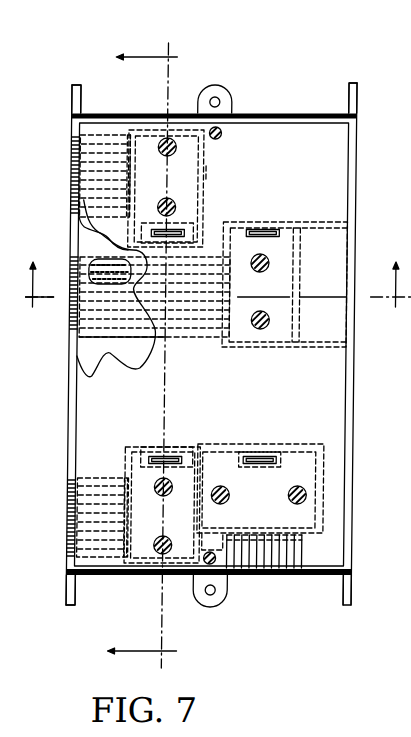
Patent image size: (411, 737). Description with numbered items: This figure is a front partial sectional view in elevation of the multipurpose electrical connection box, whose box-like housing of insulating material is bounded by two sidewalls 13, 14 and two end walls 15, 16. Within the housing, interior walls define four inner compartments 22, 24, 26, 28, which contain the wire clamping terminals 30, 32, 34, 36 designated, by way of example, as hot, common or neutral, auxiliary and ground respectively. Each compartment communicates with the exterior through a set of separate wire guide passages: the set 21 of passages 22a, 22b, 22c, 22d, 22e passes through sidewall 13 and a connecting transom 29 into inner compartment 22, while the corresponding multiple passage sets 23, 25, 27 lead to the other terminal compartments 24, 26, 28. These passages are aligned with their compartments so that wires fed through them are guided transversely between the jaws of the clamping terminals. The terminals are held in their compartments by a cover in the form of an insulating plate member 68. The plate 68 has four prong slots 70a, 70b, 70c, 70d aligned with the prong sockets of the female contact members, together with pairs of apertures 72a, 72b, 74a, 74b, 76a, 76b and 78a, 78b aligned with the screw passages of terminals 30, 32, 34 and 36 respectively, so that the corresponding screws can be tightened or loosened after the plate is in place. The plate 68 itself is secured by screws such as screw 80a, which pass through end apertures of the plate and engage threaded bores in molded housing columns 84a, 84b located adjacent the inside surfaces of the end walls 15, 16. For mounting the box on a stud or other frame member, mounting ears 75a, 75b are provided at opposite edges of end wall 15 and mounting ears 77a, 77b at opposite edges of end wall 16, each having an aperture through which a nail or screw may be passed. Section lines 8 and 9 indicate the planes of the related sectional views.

The section line 8- 8 is at (154, 355).
The section line 9- 9 is at (218, 299).
The sidewall 13 is at (73, 493).
The sidewall 14 is at (359, 163).
The end wall 15 is at (251, 113).
The end wall 16 is at (111, 577).
The set of multiple passages 21 is at (66, 266).
The inner compartment 22 is at (306, 244).
The passage 22a is at (82, 212).
The passage 22b is at (81, 250).
The passage 22c is at (76, 325).
The passage 22d is at (86, 330).
The passage 22e is at (116, 350).
The multiple passage set 23 is at (62, 143).
The inner compartment 24 is at (207, 166).
The multiple passage set 25 is at (287, 583).
The inner compartment 26 is at (324, 458).
The multiple passage set 27 is at (68, 519).
The inner compartment 28 is at (146, 447).
The connecting transom 29 is at (144, 348).
The wire clamping terminal 30 is at (293, 320).
The wire clamping terminal 32 is at (148, 134).
The wire clamping terminal 34 is at (323, 517).
The wire clamping terminal 36 is at (149, 552).
The plate member 68 is at (231, 395).
The prong slot 70a is at (276, 231).
The prong slot 70b is at (176, 228).
The prong slot 70c is at (262, 458).
The prong slot 70d is at (162, 462).
The aperture 72a is at (273, 263).
The aperture 72b is at (264, 330).
The aperture 74a is at (160, 141).
The aperture 74b is at (179, 206).
The mounting ear 75a is at (70, 92).
The mounting ear 75b is at (348, 87).
The aperture 76a is at (228, 487).
The aperture 76b is at (302, 504).
The mounting ear 77a is at (72, 598).
The mounting ear 77b is at (359, 597).
The aperture 78a is at (176, 483).
The aperture 78b is at (172, 558).
The screw 80a is at (211, 128).
The molded housing column 84a is at (222, 137).
The molded housing column 84b is at (220, 565).